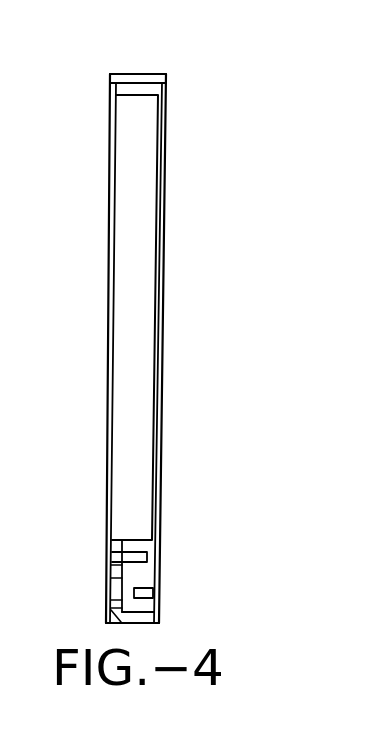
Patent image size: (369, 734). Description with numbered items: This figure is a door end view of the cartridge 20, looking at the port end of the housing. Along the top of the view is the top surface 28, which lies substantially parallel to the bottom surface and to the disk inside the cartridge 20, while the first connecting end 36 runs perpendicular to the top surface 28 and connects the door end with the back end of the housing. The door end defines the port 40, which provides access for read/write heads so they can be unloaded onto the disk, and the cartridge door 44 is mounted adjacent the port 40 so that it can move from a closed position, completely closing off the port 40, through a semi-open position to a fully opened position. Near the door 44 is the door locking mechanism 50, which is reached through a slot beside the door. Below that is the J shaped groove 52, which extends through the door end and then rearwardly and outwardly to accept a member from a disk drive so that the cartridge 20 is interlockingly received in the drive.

The cartridge 20 is at (190, 587).
The top surface 28 is at (108, 293).
The first connecting end 36 is at (132, 74).
The port 40 is at (128, 555).
The cartridge door 44 is at (137, 142).
The door locking mechanism 50 is at (113, 567).
The J shaped groove 52 is at (151, 592).